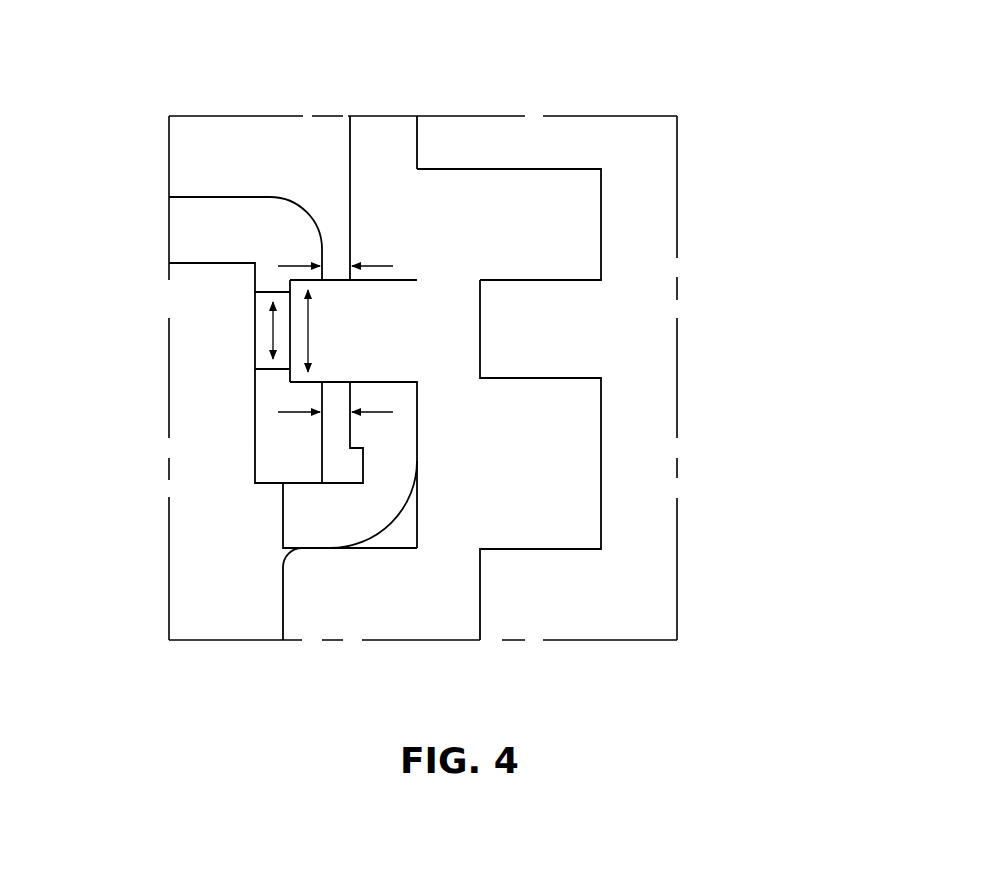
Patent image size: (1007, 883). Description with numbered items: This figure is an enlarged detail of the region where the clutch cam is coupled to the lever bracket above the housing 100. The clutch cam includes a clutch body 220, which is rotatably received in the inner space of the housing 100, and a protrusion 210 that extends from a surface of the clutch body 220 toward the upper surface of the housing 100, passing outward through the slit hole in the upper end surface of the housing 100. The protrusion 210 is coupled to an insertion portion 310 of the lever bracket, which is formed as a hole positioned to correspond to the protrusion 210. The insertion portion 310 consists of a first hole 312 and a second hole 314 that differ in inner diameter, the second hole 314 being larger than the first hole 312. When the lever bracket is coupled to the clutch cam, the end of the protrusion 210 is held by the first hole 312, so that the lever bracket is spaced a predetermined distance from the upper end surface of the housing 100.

The housing 100 is at (379, 167).
The clutch body 220 is at (474, 215).
The protrusion 210 is at (388, 312).
The insertion portion 310 is at (534, 505).
The first hole 312 is at (273, 333).
The second hole 314 is at (308, 340).